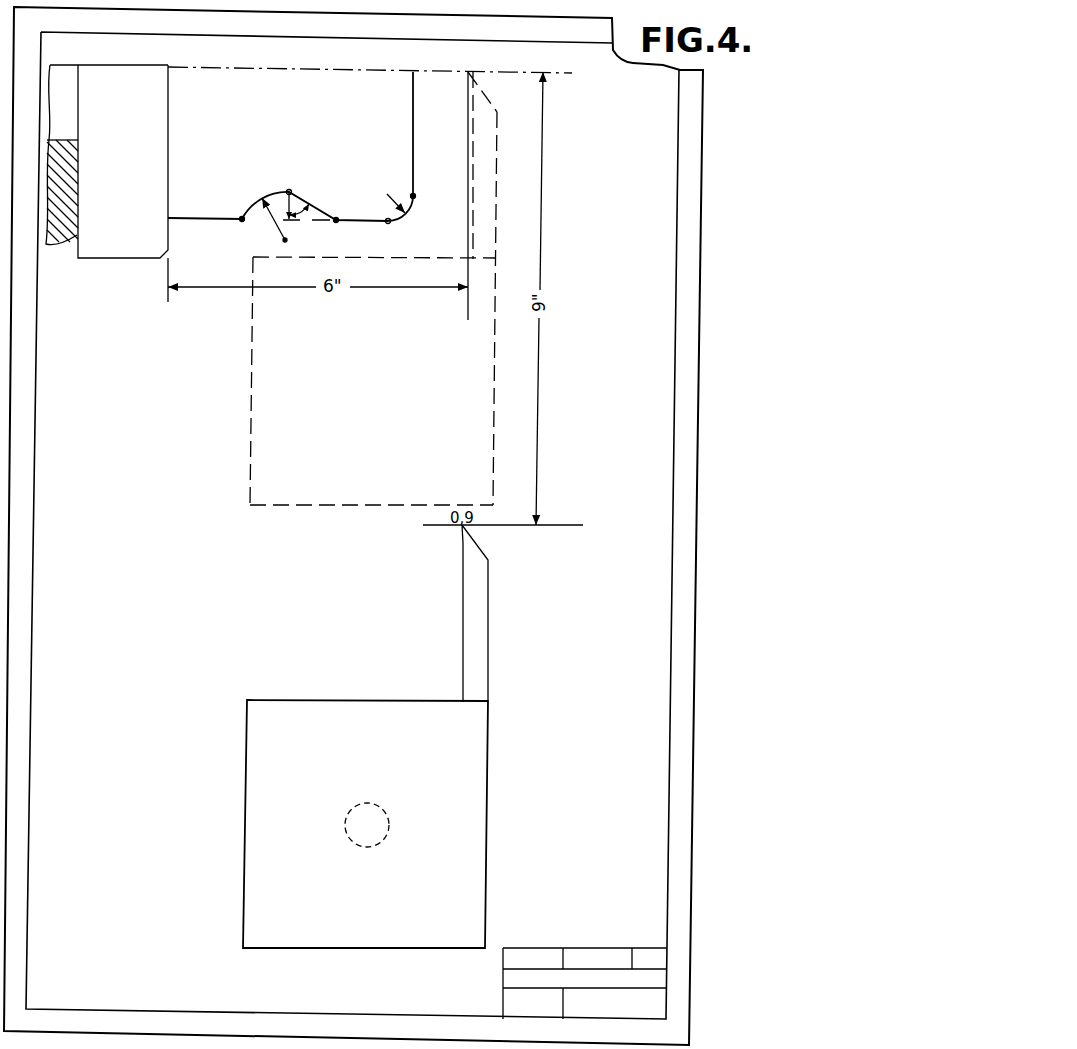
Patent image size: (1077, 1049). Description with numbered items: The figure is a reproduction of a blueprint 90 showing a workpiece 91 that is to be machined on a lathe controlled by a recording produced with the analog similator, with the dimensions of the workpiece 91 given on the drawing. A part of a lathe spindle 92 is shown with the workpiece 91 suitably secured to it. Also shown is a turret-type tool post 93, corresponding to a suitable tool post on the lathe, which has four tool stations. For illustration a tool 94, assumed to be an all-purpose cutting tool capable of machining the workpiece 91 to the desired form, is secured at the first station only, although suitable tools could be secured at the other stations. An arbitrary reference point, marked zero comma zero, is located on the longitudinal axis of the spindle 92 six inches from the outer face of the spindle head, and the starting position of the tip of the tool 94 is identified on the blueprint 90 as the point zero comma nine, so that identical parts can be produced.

The blueprint 90 is at (695, 485).
The workpiece 91 is at (412, 125).
The lathe spindle 92 is at (97, 258).
The turret-type tool post 93 is at (255, 412).
The tool 94 is at (498, 137).